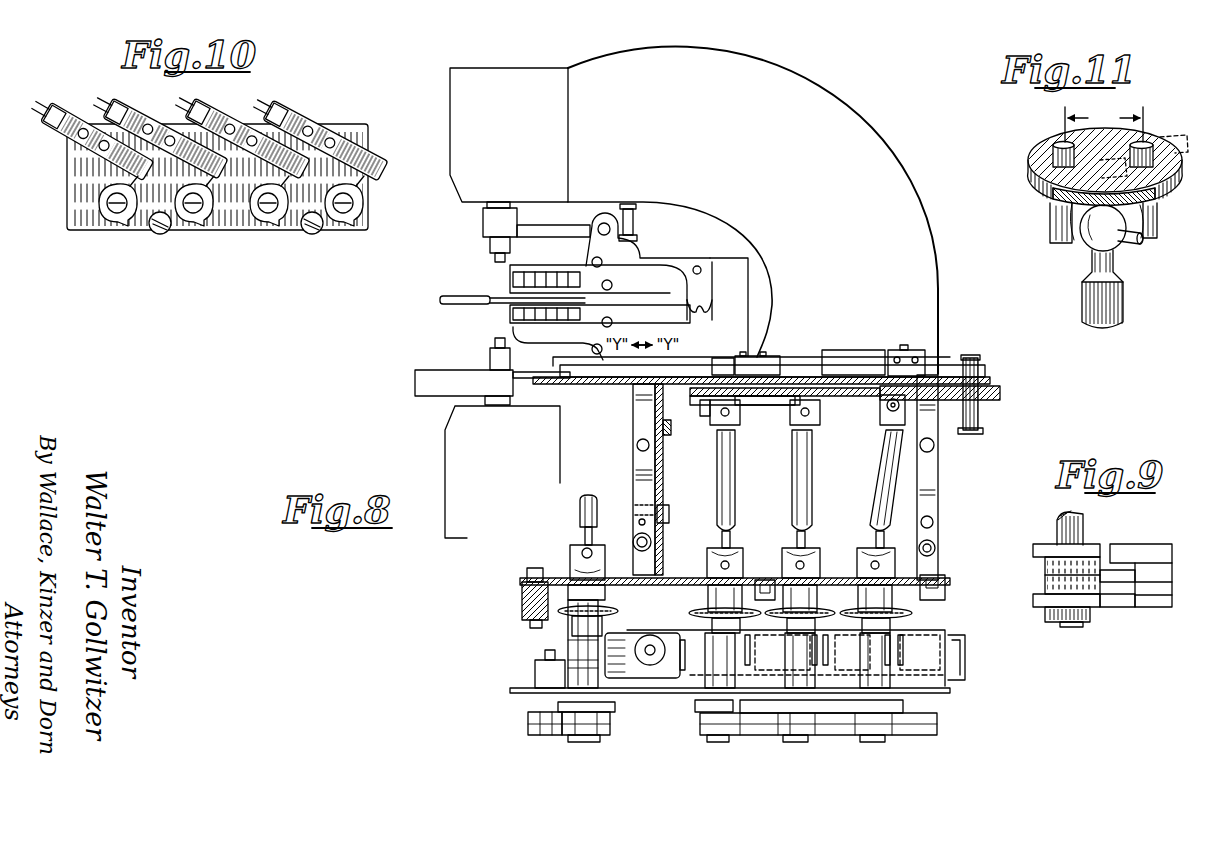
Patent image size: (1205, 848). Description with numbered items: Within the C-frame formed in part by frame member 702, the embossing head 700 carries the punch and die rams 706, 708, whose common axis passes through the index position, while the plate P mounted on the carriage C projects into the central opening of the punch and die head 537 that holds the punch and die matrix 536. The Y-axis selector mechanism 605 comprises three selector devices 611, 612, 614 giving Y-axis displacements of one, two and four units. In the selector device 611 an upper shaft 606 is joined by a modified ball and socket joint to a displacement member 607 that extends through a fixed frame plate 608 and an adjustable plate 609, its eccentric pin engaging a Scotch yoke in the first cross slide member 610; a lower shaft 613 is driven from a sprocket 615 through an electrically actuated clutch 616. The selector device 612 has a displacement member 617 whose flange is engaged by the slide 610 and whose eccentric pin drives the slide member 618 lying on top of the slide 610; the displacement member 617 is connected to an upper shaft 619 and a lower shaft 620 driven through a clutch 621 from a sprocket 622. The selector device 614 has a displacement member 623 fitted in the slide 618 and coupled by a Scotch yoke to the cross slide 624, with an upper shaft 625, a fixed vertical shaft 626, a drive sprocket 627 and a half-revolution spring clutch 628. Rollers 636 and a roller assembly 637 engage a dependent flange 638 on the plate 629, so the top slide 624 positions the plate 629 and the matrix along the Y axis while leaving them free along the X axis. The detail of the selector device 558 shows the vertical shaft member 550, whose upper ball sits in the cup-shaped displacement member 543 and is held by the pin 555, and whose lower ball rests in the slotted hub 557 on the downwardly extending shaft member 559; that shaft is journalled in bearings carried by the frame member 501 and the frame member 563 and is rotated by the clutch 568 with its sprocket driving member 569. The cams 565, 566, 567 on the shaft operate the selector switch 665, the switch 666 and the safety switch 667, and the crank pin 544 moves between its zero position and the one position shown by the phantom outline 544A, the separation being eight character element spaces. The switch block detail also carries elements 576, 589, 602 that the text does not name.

In FIG. 8, the platform plate 501 is at (673, 580).
In FIG. 8, the upper jaw plate 536 is at (643, 283).
In FIG. 8, the jaw body 537 is at (752, 272).
In FIG. 11, the hub skirt 543 is at (1054, 226).
In FIG. 11, the locating pin 544 is at (1145, 148).
In FIG. 11, the second locating pin 544A is at (1052, 142).
In FIG. 11, the handle shaft 550 is at (1095, 315).
In FIG. 8, the handle shaft 550 is at (585, 511).
In FIG. 11, the cross pin 555 is at (1141, 246).
In FIG. 8, the handle block 557 is at (570, 558).
In FIG. 11, the ball joint 558 is at (1080, 270).
In FIG. 8, the ball joint 558 is at (566, 540).
In FIG. 10, the terminal post 559 is at (343, 213).
In FIG. 9, the terminal post 559 is at (1076, 535).
In FIG. 8, the terminal post 559 is at (586, 740).
In FIG. 10, the base plate 563 is at (340, 140).
In FIG. 8, the base plate 563 is at (651, 694).
In FIG. 9, the upper flange 565 is at (1040, 544).
In FIG. 8, the upper flange 565 is at (616, 714).
In FIG. 9, the spacer body 566 is at (1053, 572).
In FIG. 8, the spacer body 566 is at (611, 727).
In FIG. 10, the lower flange 567 is at (356, 204).
In FIG. 9, the lower flange 567 is at (1038, 604).
In FIG. 8, the lower flange 567 is at (606, 743).
In FIG. 8, the motor 568 is at (566, 653).
In FIG. 8, the bearing block 569 is at (558, 622).
In FIG. 10, the first clamp 576 is at (117, 213).
In FIG. 10, the second clamp 589 is at (193, 213).
In FIG. 10, the third clamp 602 is at (268, 213).
In FIG. 8, the support column 605 is at (630, 463).
In FIG. 8, the first cylinder 606 is at (718, 471).
In FIG. 8, the first clamp head 607 is at (740, 424).
In FIG. 8, the clip 608 is at (703, 412).
In FIG. 8, the rail support 609 is at (648, 397).
In FIG. 8, the guide rail 610 is at (682, 385).
In FIG. 8, the first plunger 611 is at (741, 522).
In FIG. 8, the second plunger 612 is at (816, 511).
In FIG. 8, the first actuator 613 is at (718, 743).
In FIG. 8, the third plunger 614 is at (870, 515).
In FIG. 8, the washer 615 is at (697, 612).
In FIG. 8, the sleeve 616 is at (703, 634).
In FIG. 8, the second clamp head 617 is at (815, 422).
In FIG. 8, the slide block 618 is at (850, 388).
In FIG. 8, the second cylinder 619 is at (800, 470).
In FIG. 8, the second actuator 620 is at (798, 743).
In FIG. 8, the control box 621 is at (806, 615).
In FIG. 8, the collar 622 is at (802, 631).
In FIG. 8, the third clamp head 623 is at (886, 421).
In FIG. 8, the stop pin 624 is at (962, 368).
In FIG. 8, the third cylinder 625 is at (886, 460).
In FIG. 8, the third actuator 626 is at (876, 743).
In FIG. 8, the third washer 627 is at (902, 613).
In FIG. 8, the frame bar 628 is at (908, 631).
In FIG. 8, the hatched rail 629 is at (698, 360).
In FIG. 8, the slide 636 is at (718, 358).
In FIG. 8, the lower slide 637 is at (780, 350).
In FIG. 8, the slide block 638 is at (757, 356).
In FIG. 9, the terminal block 665 is at (1160, 551).
In FIG. 9, the terminal body 666 is at (1173, 577).
In FIG. 9, the connector tab 667 is at (1158, 608).
In FIG. 8, the adjusting block 700 is at (481, 222).
In FIG. 8, the arm housing 702 is at (808, 94).
In FIG. 8, the adjusting screw 706 is at (492, 255).
In FIG. 8, the post 708 is at (493, 353).
In FIG. 8, the pointer C is at (438, 300).
In FIG. 8, the strip P is at (500, 302).